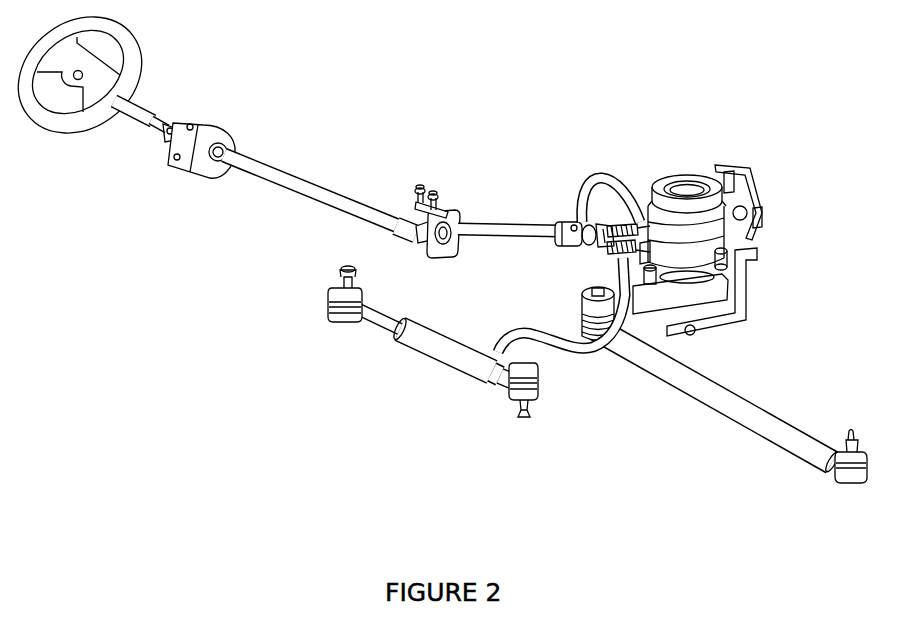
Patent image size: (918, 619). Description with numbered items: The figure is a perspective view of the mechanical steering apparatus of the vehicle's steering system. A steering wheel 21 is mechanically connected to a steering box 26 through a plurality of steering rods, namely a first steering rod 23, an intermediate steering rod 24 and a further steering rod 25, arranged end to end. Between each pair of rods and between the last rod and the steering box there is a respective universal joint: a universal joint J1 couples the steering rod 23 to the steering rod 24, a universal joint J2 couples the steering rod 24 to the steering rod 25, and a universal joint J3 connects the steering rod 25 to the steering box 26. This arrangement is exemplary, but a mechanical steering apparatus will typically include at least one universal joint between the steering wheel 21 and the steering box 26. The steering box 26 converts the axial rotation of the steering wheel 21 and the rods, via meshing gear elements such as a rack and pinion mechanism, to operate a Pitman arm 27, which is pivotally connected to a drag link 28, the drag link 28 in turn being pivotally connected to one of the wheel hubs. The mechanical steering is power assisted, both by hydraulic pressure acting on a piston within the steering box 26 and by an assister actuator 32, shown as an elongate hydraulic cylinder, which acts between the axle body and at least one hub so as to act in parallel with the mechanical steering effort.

The steering wheel 21 is at (80, 133).
The steering rod 23 is at (136, 105).
The universal joint J1 is at (174, 126).
The steering rod 24 is at (286, 172).
The universal joint J2 is at (405, 210).
The steering rod 25 is at (498, 225).
The universal joint J3 is at (573, 220).
The steering box 26 is at (640, 193).
The Pitman arm 27 is at (580, 305).
The drag link 28 is at (753, 400).
The assister actuator 32 is at (448, 357).